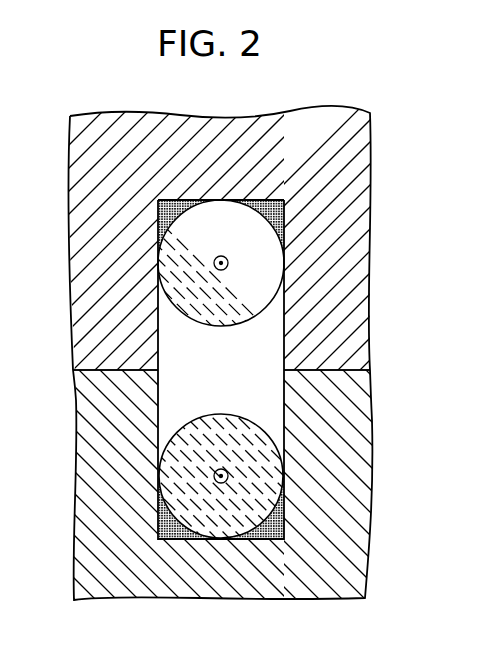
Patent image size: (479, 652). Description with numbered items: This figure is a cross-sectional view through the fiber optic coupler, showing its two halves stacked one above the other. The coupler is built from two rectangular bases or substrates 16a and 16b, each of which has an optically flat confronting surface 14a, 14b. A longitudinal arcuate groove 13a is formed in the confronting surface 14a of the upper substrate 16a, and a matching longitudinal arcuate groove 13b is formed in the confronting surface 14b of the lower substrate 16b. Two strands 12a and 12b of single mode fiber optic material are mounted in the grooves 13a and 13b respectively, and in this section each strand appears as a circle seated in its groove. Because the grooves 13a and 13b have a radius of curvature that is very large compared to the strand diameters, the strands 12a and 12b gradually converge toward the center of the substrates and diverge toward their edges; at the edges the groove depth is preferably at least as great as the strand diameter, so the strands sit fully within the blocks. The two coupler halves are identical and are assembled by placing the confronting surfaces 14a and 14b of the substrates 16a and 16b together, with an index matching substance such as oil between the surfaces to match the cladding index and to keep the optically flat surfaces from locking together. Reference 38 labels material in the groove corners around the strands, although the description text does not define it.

The fiber optic strand 12a is at (258, 288).
The fiber optic strand 12b is at (262, 487).
The longitudinal arcuate groove 13a is at (150, 328).
The longitudinal arcuate groove 13b is at (300, 390).
The optically flat confronting surface 14a is at (112, 374).
The optically flat confronting surface 14b is at (320, 372).
The rectangular base or substrate 16a is at (320, 112).
The rectangular base or substrate 16b is at (318, 599).
The braze fillet 38 is at (196, 199).